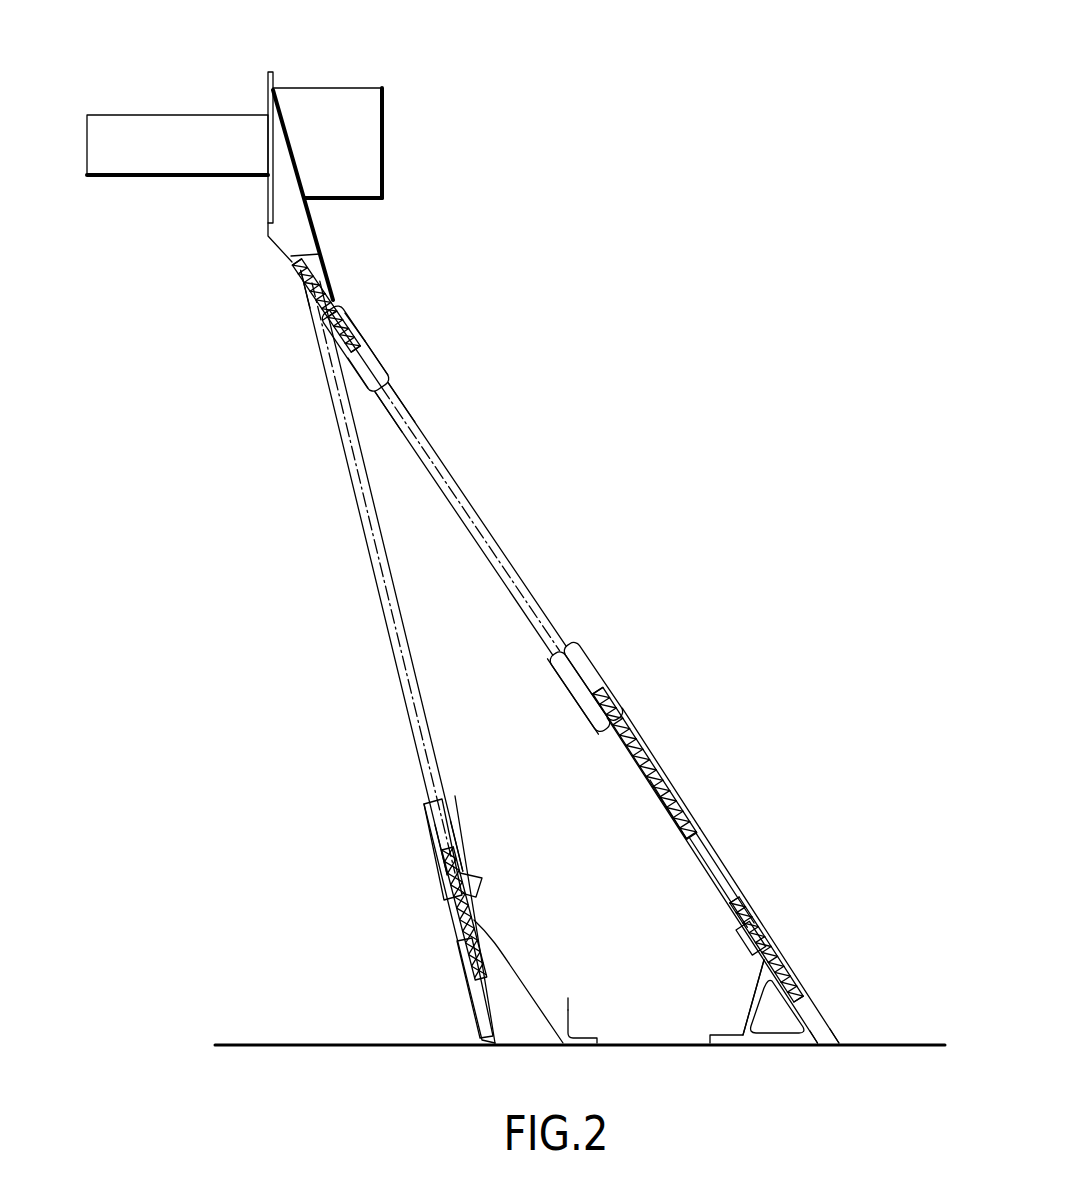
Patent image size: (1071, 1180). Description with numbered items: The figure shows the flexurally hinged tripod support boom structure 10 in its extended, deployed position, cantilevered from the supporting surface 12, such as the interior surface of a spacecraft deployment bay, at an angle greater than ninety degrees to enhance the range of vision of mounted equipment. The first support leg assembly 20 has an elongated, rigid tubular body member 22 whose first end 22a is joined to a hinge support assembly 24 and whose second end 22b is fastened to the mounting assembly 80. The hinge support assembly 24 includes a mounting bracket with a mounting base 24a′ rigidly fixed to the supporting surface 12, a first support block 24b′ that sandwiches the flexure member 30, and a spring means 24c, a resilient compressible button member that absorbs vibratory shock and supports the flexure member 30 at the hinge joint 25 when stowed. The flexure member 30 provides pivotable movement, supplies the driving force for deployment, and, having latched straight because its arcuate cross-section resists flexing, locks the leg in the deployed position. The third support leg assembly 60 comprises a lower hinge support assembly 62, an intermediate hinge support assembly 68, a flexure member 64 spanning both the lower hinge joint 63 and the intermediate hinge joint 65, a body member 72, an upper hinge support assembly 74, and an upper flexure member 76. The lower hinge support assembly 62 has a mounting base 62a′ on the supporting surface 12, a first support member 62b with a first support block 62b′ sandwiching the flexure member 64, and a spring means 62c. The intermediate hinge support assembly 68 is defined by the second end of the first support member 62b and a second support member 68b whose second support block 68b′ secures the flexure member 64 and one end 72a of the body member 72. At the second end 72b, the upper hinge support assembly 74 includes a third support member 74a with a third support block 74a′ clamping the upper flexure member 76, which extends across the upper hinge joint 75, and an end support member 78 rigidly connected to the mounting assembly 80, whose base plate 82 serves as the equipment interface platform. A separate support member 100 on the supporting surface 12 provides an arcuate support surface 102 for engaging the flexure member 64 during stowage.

The support boom structure 10 is at (711, 380).
The supporting surface 12 is at (297, 1030).
The first support leg assembly 20 is at (325, 710).
The elongated body member 22 is at (382, 618).
The first end of body member 22a is at (446, 797).
The second end of body member 22b is at (315, 335).
The hinge support assembly 24 is at (513, 927).
The mounting base 24a′ is at (505, 972).
The first support block 24b′ is at (426, 822).
The spring means 24c is at (476, 890).
The hinge joint 25 is at (432, 933).
The flexure member 30 is at (460, 923).
The third support leg assembly 60 is at (582, 559).
The lower hinge support assembly 62 is at (805, 926).
The mounting base 62a′ is at (741, 1033).
The first support member 62b is at (754, 855).
The first support block 62b′ is at (680, 800).
The spring means 62c is at (752, 955).
The lower hinge joint 63 is at (753, 967).
The flexure member 64 is at (623, 733).
The intermediate hinge joint 65 is at (619, 781).
The intermediate hinge support assembly 68 is at (662, 717).
The second support member 68b is at (642, 685).
The second support block 68b′ is at (588, 677).
The body member 72 is at (433, 455).
The one end of body member 72a is at (566, 640).
The second end of body member 72b is at (388, 395).
The upper hinge support assembly 74 is at (295, 327).
The third support member 74a is at (411, 369).
The third support block 74a′ is at (348, 408).
The upper hinge joint 75 is at (356, 289).
The upper flexure member 76 is at (352, 325).
The end support member 78 is at (323, 258).
The mounting assembly 80 is at (240, 202).
The base plate 82 is at (273, 78).
The support member 100 is at (587, 1007).
The arcuate support surface 102 is at (568, 998).